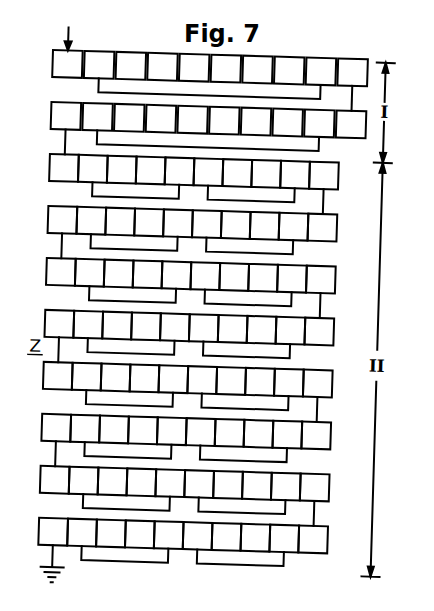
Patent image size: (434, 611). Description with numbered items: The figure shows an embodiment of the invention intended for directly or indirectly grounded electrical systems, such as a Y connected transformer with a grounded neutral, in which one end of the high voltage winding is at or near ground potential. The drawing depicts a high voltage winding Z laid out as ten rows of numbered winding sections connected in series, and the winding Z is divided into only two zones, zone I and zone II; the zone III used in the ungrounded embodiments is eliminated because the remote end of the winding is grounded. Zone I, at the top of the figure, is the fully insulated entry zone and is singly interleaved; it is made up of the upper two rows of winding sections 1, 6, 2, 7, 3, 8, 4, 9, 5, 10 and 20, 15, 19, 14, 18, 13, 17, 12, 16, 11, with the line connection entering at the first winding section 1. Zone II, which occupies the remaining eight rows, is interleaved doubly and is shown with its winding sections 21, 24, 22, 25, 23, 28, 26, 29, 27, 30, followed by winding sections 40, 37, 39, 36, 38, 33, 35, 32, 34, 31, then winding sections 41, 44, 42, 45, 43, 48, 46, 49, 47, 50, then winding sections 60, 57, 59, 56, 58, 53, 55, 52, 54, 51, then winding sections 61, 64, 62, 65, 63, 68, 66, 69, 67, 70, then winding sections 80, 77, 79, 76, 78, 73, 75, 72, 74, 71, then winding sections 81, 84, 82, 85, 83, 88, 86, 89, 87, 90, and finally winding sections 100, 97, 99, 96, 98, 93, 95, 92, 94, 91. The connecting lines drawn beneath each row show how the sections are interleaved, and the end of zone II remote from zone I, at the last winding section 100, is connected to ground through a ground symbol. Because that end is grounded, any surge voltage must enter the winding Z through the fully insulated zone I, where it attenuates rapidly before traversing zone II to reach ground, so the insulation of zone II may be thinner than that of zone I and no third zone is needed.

The unit 1 is at (67, 64).
The unit 2 is at (131, 66).
The unit 3 is at (194, 68).
The unit 4 is at (257, 70).
The unit 5 is at (321, 72).
The unit 6 is at (99, 65).
The unit 7 is at (162, 67).
The unit 8 is at (226, 69).
The unit 9 is at (289, 71).
The unit 10 is at (352, 72).
The unit 11 is at (351, 124).
The unit 12 is at (287, 123).
The unit 13 is at (224, 121).
The unit 14 is at (161, 119).
The unit 15 is at (97, 117).
The unit 16 is at (319, 124).
The unit 17 is at (256, 122).
The unit 18 is at (192, 120).
The unit 19 is at (129, 118).
The unit 20 is at (66, 116).
The unit 21 is at (64, 168).
The unit 22 is at (122, 170).
The unit 23 is at (180, 171).
The unit 24 is at (93, 169).
The unit 25 is at (151, 171).
The unit 26 is at (237, 173).
The unit 27 is at (295, 175).
The unit 28 is at (209, 172).
The unit 29 is at (266, 174).
The unit 30 is at (324, 176).
The unit 31 is at (323, 228).
The unit 32 is at (265, 226).
The unit 33 is at (207, 224).
The unit 34 is at (294, 227).
The unit 35 is at (236, 225).
The unit 36 is at (149, 223).
The unit 37 is at (91, 221).
The unit 38 is at (178, 223).
The unit 39 is at (120, 222).
The unit 40 is at (63, 220).
The unit 41 is at (61, 272).
The unit 42 is at (119, 274).
The unit 43 is at (177, 275).
The unit 44 is at (90, 273).
The unit 45 is at (148, 274).
The unit 46 is at (234, 277).
The unit 47 is at (292, 279).
The unit 48 is at (205, 276).
The unit 49 is at (263, 278).
The unit 50 is at (321, 280).
The unit 51 is at (319, 332).
The unit 52 is at (262, 330).
The unit 53 is at (204, 328).
The unit 54 is at (291, 331).
The unit 55 is at (233, 329).
The unit 56 is at (146, 326).
The unit 57 is at (88, 325).
The unit 58 is at (175, 327).
The unit 59 is at (117, 326).
The unit 60 is at (59, 324).
The unit 61 is at (58, 376).
The unit 62 is at (116, 378).
The unit 63 is at (173, 379).
The unit 64 is at (87, 377).
The unit 65 is at (145, 378).
The unit 66 is at (231, 381).
The unit 67 is at (289, 383).
The unit 68 is at (202, 380).
The unit 69 is at (260, 382).
The unit 70 is at (318, 384).
The unit 71 is at (316, 436).
The unit 72 is at (259, 434).
The unit 73 is at (201, 432).
The unit 74 is at (287, 435).
The unit 75 is at (230, 433).
The unit 76 is at (143, 430).
The unit 77 is at (85, 429).
The unit 78 is at (172, 431).
The unit 79 is at (114, 430).
The unit 80 is at (56, 428).
The unit 81 is at (55, 480).
The unit 82 is at (113, 482).
The unit 83 is at (170, 483).
The unit 84 is at (84, 481).
The unit 85 is at (142, 482).
The unit 86 is at (228, 485).
The unit 87 is at (286, 487).
The unit 88 is at (199, 484).
The unit 89 is at (257, 486).
The unit 90 is at (315, 488).
The unit 91 is at (313, 540).
The unit 92 is at (256, 538).
The unit 93 is at (198, 536).
The unit 94 is at (284, 539).
The unit 95 is at (227, 537).
The unit 96 is at (140, 534).
The unit 97 is at (82, 533).
The unit 98 is at (169, 535).
The unit 99 is at (111, 534).
The unit 100 is at (53, 532).